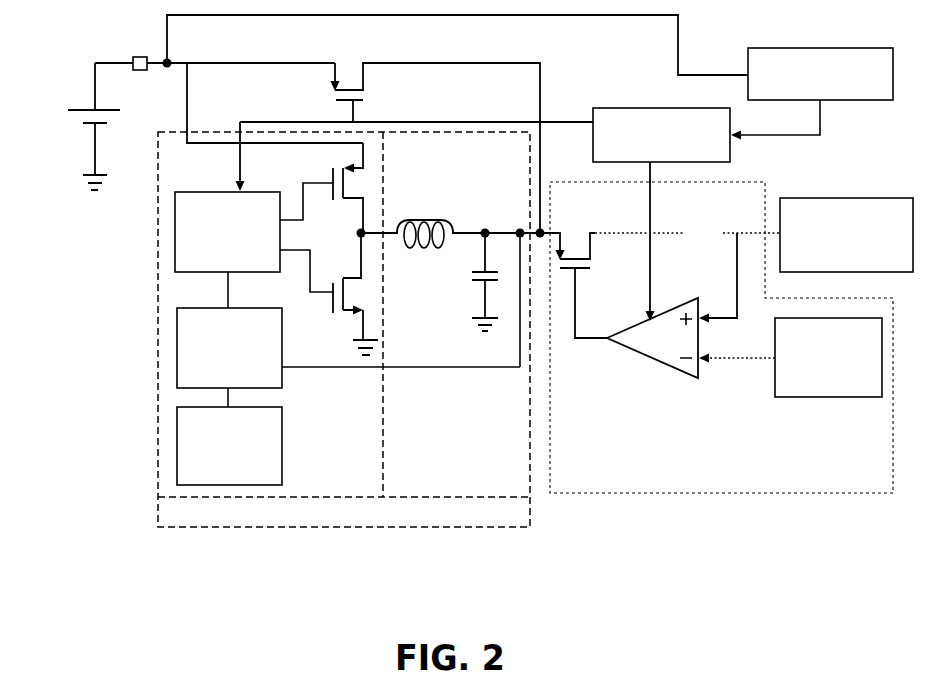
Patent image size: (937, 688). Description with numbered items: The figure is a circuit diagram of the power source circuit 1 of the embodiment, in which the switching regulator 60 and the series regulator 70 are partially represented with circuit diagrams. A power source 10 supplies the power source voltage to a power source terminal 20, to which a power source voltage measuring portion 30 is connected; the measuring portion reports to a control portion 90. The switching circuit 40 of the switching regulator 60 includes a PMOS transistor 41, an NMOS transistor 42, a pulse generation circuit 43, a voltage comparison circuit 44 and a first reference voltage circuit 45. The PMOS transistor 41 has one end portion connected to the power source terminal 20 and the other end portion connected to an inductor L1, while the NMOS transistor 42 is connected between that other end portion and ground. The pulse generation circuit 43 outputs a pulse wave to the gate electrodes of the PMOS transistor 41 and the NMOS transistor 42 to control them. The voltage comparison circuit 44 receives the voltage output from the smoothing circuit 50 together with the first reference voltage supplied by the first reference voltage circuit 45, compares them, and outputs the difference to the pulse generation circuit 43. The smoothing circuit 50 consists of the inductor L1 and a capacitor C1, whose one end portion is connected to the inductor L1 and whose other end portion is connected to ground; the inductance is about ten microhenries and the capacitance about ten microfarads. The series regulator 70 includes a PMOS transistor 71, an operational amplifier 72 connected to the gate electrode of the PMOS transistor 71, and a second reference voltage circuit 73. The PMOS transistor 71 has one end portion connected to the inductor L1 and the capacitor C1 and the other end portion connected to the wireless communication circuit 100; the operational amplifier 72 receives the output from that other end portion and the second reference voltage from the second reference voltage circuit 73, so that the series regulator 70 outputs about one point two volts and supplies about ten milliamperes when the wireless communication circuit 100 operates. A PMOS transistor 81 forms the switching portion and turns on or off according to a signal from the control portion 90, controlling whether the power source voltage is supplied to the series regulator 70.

The power source circuit 1 is at (497, 569).
The power source 10 is at (116, 126).
The power source terminal 20 is at (88, 44).
The power source voltage measuring portion 30 is at (812, 94).
The switching circuit 40 is at (347, 314).
The PMOS transistor 41 is at (336, 188).
The NMOS transistor 42 is at (350, 294).
The pulse generation circuit 43 is at (254, 245).
The voltage comparison circuit 44 is at (348, 357).
The first reference voltage circuit 45 is at (229, 446).
The smoothing circuit 50 is at (451, 351).
The switching regulator 60 is at (351, 329).
The series regulator 70 is at (716, 337).
The PMOS transistor 71 is at (660, 275).
The operational amplifier 72 is at (652, 341).
The second reference voltage circuit 73 is at (790, 357).
The PMOS transistor 81 is at (436, 139).
The control portion 90 is at (661, 214).
The wireless communication circuit 100 is at (846, 235).
The inductor L1 is at (449, 248).
The capacitor C1 is at (494, 298).